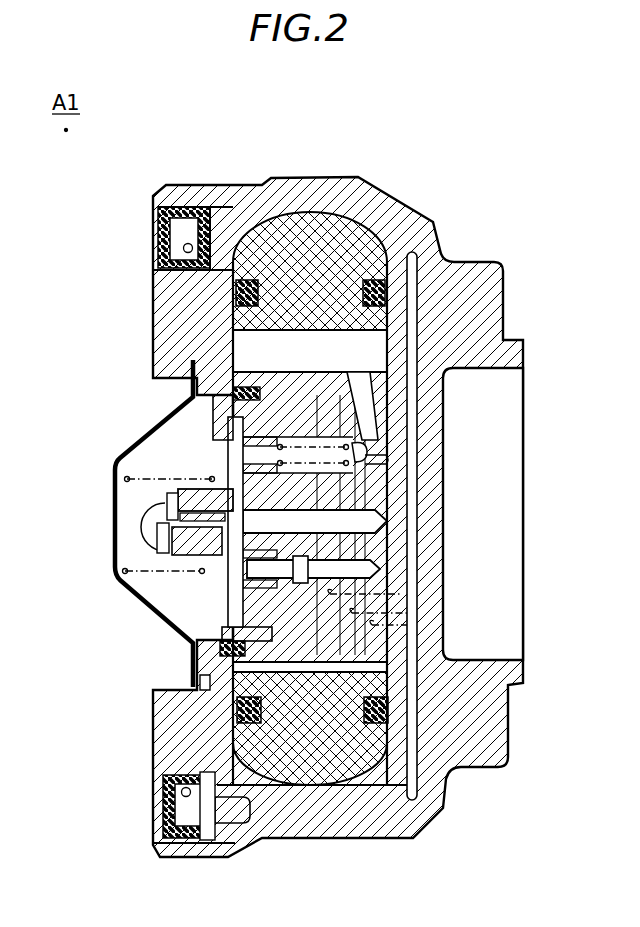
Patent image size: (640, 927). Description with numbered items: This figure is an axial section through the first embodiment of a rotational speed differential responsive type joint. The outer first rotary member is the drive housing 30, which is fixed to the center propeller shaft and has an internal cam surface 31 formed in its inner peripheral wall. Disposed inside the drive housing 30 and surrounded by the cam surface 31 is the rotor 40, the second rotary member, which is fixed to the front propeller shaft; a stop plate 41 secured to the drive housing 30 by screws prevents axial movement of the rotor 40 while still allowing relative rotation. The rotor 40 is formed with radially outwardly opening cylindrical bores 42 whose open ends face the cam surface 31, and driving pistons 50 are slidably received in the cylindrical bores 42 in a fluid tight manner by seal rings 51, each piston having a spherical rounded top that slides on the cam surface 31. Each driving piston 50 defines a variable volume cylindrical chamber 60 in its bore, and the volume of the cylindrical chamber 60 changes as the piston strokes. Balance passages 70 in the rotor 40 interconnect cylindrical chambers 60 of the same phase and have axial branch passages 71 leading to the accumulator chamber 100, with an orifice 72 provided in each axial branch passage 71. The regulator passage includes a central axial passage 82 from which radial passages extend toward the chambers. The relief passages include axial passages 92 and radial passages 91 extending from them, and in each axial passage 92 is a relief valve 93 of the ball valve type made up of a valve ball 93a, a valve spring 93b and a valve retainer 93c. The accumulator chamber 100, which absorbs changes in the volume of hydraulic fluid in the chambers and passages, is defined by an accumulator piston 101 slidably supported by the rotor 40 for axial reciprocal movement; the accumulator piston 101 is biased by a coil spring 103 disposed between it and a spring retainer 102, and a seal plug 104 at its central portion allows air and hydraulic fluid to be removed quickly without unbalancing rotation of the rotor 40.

The drive housing 30 is at (478, 262).
The cam surface 31 is at (342, 213).
The rotor 40 is at (152, 305).
The stop plate 41 is at (207, 840).
The cylindrical bores 42 is at (408, 332).
The driving pistons 50 is at (293, 235).
The seal rings 51 is at (247, 292).
The cylindrical chambers 60 is at (327, 340).
The balance passages 70 is at (372, 625).
The axial branch passages 71 is at (318, 590).
The orifice 72 is at (256, 618).
The central axial passage 82 is at (303, 534).
The radial passages 91 is at (400, 424).
The axial passages 92 is at (360, 478).
The relief valve 93 is at (291, 436).
The valve ball 93a is at (368, 458).
The valve spring 93b is at (303, 517).
The valve retainer 93c is at (238, 494).
The accumulator chamber 100 is at (232, 612).
The accumulator piston 101 is at (207, 603).
The spring retainer 102 is at (140, 468).
The coil spring 103 is at (123, 463).
The seal plug 104 is at (148, 532).